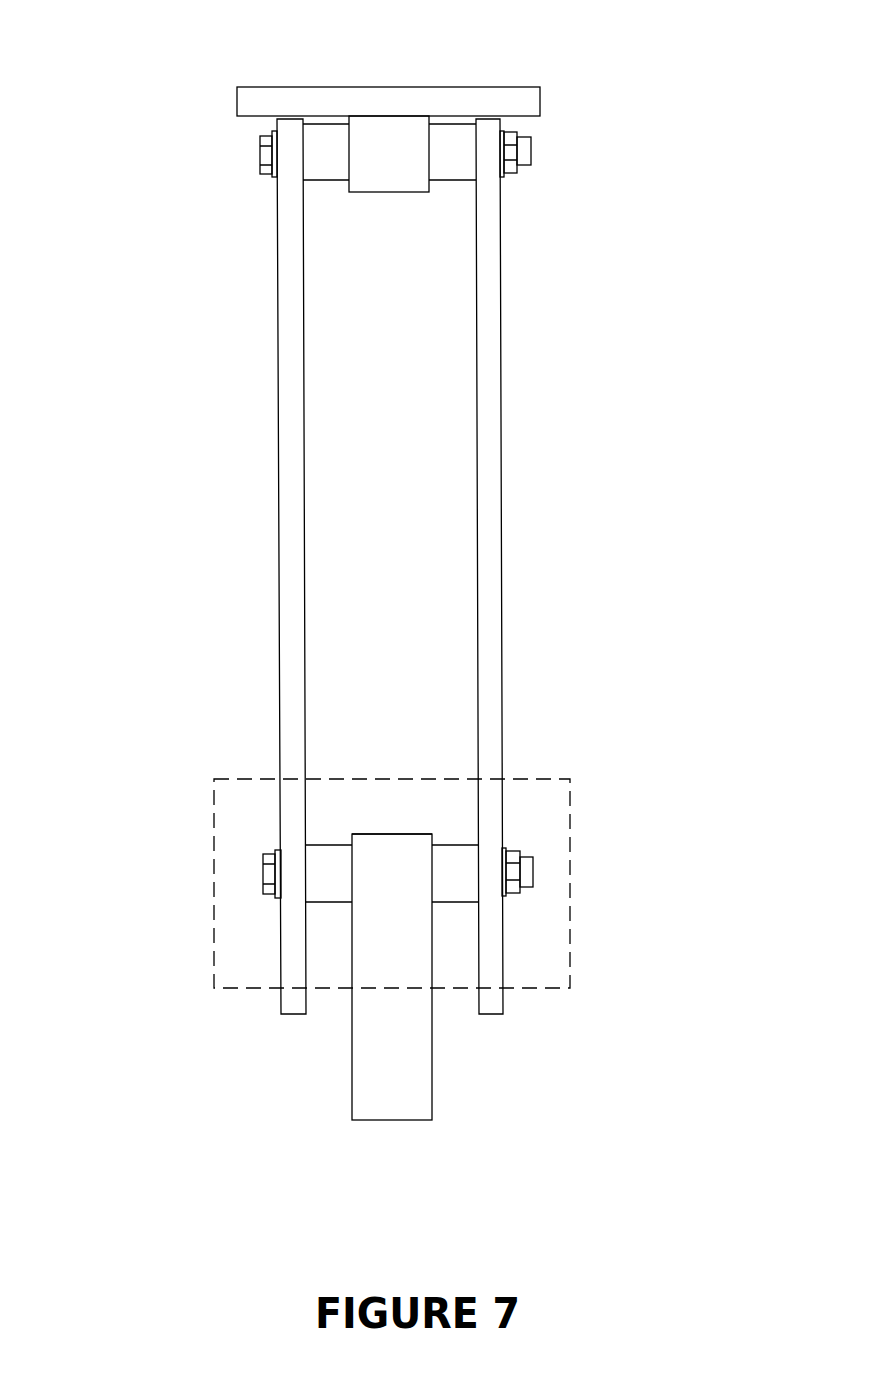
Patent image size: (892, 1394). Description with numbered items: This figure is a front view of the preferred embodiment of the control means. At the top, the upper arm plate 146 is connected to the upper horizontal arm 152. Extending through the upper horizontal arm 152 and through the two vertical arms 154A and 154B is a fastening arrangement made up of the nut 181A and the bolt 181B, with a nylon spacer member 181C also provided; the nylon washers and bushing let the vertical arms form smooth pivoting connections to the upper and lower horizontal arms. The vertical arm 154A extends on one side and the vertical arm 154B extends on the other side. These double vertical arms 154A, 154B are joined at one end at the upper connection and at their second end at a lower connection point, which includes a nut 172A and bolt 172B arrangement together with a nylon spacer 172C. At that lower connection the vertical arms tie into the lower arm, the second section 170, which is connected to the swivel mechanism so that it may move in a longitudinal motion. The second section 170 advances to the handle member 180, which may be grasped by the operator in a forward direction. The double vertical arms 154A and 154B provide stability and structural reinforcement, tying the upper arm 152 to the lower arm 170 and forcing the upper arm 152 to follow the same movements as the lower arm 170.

The upper arm plate 146 is at (446, 105).
The upper horizontal arm 152 is at (380, 181).
The vertical arm 154A is at (292, 457).
The vertical arm 154B is at (492, 425).
The second section 170 is at (382, 833).
The nut 172A is at (533, 864).
The bolt 172B is at (273, 868).
The nylon spacer 172C is at (452, 859).
The handle member 180 is at (383, 1095).
The nut 181A is at (512, 152).
The bolt 181B is at (268, 161).
The nylon spacer member 181C is at (456, 165).